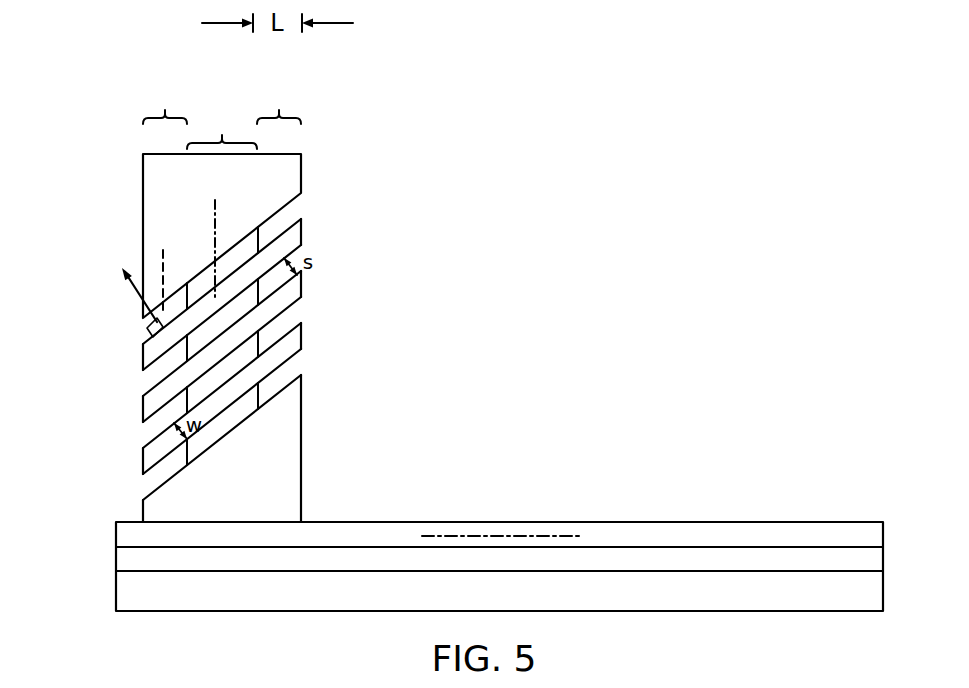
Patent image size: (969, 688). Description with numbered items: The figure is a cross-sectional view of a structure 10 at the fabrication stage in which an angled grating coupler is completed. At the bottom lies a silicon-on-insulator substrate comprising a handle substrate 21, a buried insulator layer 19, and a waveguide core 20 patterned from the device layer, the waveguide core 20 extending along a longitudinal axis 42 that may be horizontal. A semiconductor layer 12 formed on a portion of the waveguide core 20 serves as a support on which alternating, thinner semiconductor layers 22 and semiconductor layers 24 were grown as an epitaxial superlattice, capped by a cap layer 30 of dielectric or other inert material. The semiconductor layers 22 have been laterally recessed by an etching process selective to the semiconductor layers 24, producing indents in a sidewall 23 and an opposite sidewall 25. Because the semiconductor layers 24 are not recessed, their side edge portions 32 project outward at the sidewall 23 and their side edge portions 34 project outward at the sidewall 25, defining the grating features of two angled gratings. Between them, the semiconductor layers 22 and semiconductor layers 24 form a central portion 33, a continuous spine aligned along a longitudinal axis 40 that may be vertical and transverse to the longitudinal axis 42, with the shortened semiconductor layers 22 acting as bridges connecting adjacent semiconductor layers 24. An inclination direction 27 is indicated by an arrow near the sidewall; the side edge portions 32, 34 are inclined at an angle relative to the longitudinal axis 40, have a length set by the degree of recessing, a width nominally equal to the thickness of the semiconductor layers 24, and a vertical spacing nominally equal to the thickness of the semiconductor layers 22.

The structure 10 is at (406, 140).
The semiconductor layer 12 is at (205, 482).
The buried insulator layer 19 is at (182, 564).
The waveguide core 20 is at (180, 538).
The handle substrate 21 is at (180, 594).
The semiconductor layers 22 is at (247, 248).
The sidewall 23 is at (301, 335).
The semiconductor layers 24 is at (168, 338).
The sidewall 25 is at (143, 408).
The inclination direction 27 is at (145, 293).
The cap layer 30 is at (168, 182).
The side edge portions 32 is at (165, 100).
The central portion 33 is at (222, 125).
The side edge portions 34 is at (279, 100).
The longitudinal axis 40 is at (215, 221).
The longitudinal axis 42 is at (492, 537).